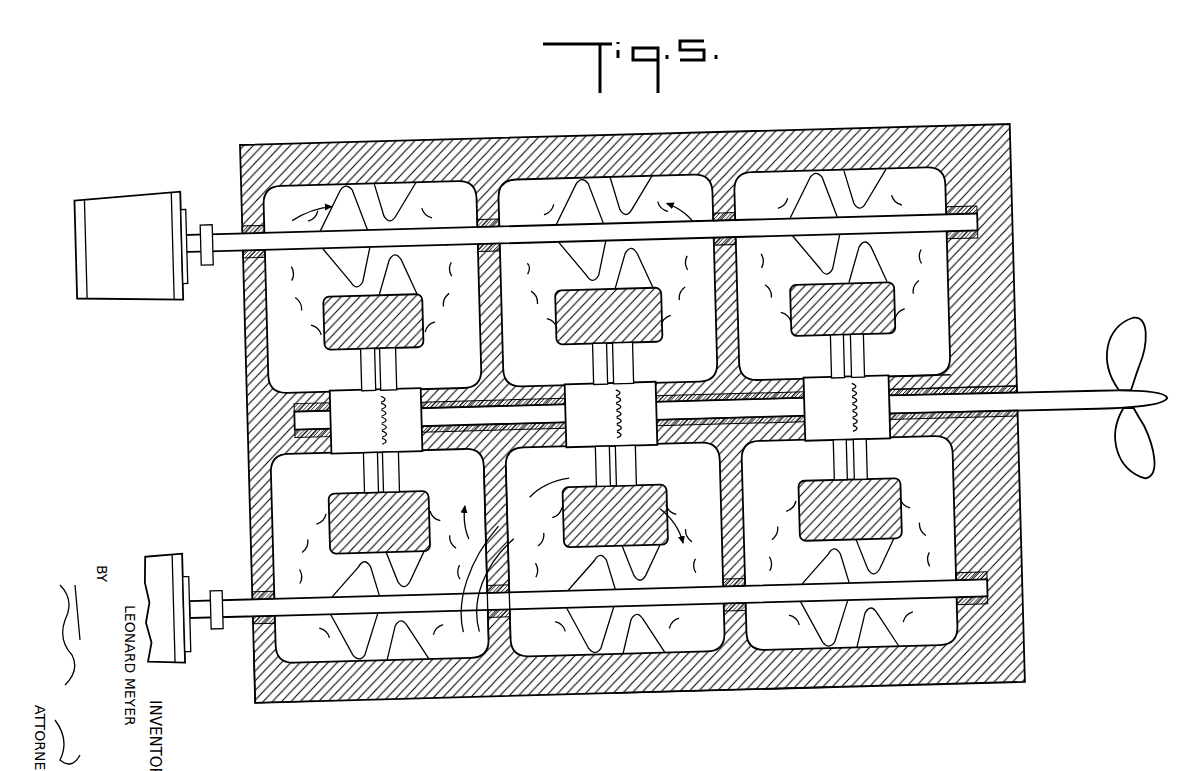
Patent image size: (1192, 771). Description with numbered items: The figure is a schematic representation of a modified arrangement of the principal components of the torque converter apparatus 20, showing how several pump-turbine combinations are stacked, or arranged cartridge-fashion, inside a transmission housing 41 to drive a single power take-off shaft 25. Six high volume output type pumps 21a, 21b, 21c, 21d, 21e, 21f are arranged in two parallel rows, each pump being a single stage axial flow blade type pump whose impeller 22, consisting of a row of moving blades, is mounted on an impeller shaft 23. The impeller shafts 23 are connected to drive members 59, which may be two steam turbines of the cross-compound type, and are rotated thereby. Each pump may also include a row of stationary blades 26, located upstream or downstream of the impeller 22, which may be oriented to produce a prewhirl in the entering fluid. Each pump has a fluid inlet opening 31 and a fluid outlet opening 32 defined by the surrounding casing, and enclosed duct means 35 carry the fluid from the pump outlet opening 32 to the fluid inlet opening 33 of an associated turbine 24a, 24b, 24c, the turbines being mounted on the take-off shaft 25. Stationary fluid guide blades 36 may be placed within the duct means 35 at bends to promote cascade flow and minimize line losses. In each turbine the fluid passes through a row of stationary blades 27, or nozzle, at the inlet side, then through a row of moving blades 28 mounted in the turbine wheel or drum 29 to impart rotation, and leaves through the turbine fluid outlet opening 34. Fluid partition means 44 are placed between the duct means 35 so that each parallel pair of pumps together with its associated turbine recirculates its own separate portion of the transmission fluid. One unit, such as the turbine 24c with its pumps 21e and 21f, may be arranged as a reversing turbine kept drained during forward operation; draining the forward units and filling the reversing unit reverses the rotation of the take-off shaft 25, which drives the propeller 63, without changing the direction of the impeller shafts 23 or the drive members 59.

The torque converter apparatus 20 is at (921, 145).
The pump 21a is at (367, 641).
The pump 21b is at (366, 200).
The pump 21c is at (608, 200).
The pump 21d is at (608, 650).
The pump 21e is at (846, 197).
The pump 21f is at (840, 645).
The impeller 22 is at (865, 657).
The impeller shaft 23 is at (217, 240).
The turbine 24a is at (330, 447).
The turbine 24b is at (578, 445).
The turbine 24c is at (810, 441).
The power take-off shaft 25 is at (1063, 418).
The stationary blades 26 is at (819, 632).
The stationary blades 27 is at (828, 363).
The moving blades 28 is at (861, 369).
The turbine wheel 29 is at (881, 401).
The fluid inlet opening 31 is at (322, 635).
The fluid outlet opening 32 is at (414, 635).
The fluid inlet opening 33 is at (367, 501).
The fluid outlet opening 34 is at (321, 479).
The duct means 35 is at (479, 590).
The stationary fluid guide blades 36 is at (243, 679).
The transmission housing 41 is at (675, 695).
The fluid partition means 44 is at (492, 537).
The drive members 59 is at (147, 198).
The propeller 63 is at (1135, 358).